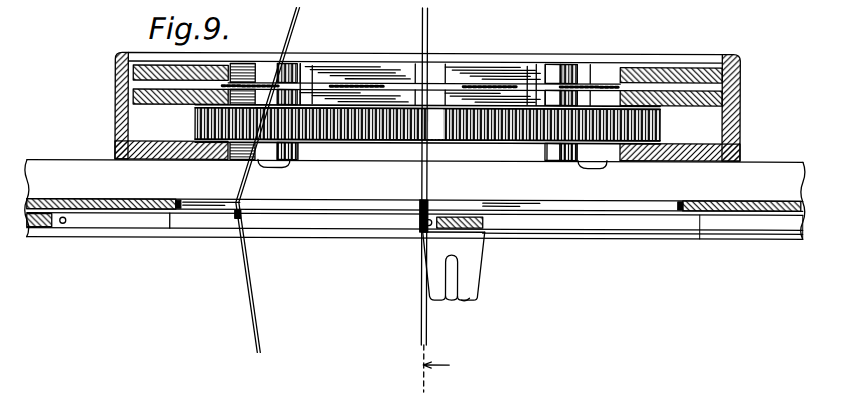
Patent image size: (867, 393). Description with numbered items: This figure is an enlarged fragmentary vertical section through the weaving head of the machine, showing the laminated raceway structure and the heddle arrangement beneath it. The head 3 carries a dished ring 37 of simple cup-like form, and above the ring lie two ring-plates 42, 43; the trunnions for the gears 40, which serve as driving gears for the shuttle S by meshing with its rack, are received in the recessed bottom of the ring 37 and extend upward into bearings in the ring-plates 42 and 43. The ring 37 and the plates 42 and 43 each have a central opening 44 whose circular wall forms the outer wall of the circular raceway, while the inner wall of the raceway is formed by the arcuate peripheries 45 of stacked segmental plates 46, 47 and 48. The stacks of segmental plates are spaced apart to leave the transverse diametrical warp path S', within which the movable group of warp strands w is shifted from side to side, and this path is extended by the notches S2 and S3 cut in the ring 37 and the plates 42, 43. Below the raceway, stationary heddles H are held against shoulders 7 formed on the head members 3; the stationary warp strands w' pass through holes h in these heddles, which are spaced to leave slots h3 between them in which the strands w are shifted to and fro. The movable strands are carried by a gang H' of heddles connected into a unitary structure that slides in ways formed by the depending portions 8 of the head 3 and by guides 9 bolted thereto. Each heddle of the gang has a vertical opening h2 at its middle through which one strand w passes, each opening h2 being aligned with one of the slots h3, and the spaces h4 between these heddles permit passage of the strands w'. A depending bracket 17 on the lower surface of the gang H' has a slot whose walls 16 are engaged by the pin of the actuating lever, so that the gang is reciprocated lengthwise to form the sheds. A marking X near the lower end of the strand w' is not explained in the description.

The dished ring 37 is at (114, 66).
The ring-plate 43 is at (133, 76).
The ring-plate 42 is at (133, 100).
The gears 40 is at (195, 121).
The segmental plate 47 is at (387, 97).
The segmental plate 48 is at (346, 72).
The segmental plate 46 is at (397, 157).
The arcuate peripheries 45 is at (312, 97).
The central openings 44 is at (263, 162).
The notch S2 is at (244, 93).
The shuttle S is at (429, 117).
The transverse diametrical path S' is at (535, 95).
The notch S3 is at (597, 97).
The head 3 is at (759, 172).
The shoulders 7 is at (699, 200).
The depending portions 8 is at (702, 226).
The guides 9 is at (647, 240).
The stationary heddles H is at (751, 246).
The heddle gang H' is at (468, 258).
The depending bracket 17 is at (477, 285).
The slot walls 16 is at (467, 302).
The holes h is at (436, 202).
The vertical opening h2 is at (230, 233).
The slots h3 is at (310, 205).
The spaces h4 is at (177, 220).
The movable warp strands w is at (280, 179).
The stationary warp strands w' is at (443, 176).
The offset distance X is at (417, 368).